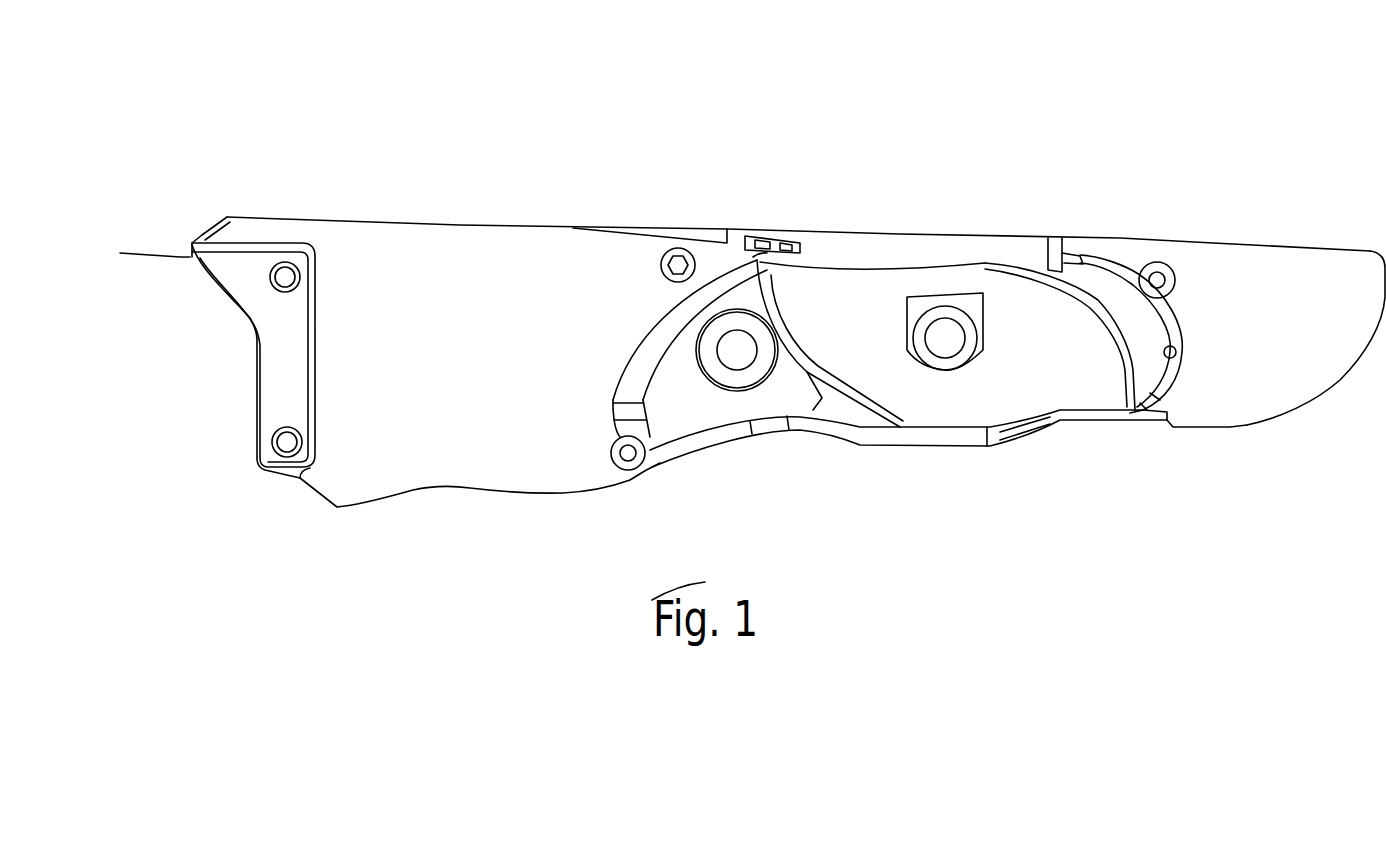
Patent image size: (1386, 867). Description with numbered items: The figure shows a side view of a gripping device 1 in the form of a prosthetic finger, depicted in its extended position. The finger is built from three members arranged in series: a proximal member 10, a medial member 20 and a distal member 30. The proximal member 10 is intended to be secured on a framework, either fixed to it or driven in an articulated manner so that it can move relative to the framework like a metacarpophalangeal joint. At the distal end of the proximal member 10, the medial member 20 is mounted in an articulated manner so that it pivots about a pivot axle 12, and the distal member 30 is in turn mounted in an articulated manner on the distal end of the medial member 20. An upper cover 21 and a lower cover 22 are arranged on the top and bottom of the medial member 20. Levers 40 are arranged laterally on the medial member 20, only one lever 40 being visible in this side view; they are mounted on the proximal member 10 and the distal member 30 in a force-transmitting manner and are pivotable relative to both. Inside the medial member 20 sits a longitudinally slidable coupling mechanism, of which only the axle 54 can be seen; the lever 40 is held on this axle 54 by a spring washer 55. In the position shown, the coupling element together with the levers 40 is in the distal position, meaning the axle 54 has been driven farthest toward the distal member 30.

The gripping device 1 is at (522, 105).
The proximal member 10 is at (400, 250).
The pivot axle 12 is at (737, 343).
The medial member 20 is at (912, 207).
The upper cover 21 is at (963, 250).
The lower cover 22 is at (955, 457).
The distal member 30 is at (1220, 260).
The lever 40 is at (857, 287).
The axle 54 is at (945, 340).
The spring washer 55 is at (935, 318).